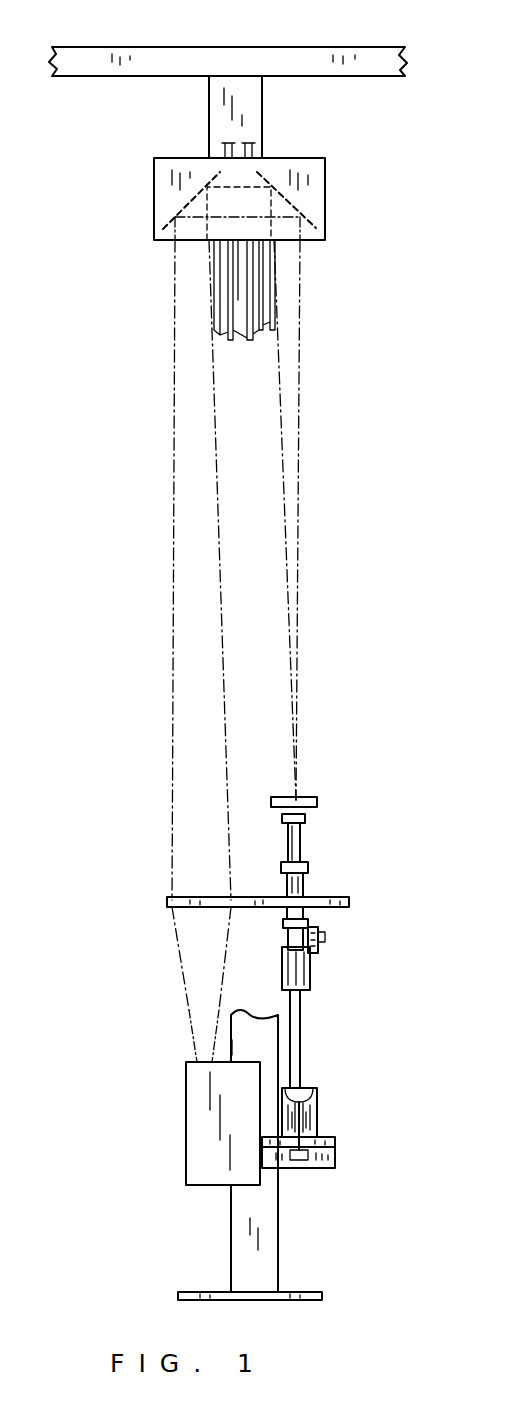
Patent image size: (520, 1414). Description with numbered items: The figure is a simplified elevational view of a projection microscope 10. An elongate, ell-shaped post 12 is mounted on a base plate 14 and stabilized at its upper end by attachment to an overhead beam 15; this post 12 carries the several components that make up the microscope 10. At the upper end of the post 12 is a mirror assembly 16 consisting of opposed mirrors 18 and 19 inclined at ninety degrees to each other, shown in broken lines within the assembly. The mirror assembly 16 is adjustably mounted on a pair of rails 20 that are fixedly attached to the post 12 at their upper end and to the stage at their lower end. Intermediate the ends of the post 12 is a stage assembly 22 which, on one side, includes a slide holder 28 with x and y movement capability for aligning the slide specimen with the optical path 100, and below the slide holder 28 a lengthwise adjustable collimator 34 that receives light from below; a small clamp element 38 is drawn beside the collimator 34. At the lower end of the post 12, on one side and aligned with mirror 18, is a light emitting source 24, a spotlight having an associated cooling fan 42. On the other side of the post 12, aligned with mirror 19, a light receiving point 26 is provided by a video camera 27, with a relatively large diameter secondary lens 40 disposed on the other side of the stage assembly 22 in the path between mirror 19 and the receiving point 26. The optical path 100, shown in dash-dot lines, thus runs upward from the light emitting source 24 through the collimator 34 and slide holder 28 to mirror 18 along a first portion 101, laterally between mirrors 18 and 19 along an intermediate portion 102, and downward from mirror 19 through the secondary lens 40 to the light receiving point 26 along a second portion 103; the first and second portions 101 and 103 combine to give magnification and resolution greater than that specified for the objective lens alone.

The projection microscope 10 is at (160, 330).
The post 12 is at (262, 115).
The base plate 14 is at (305, 1292).
The overhead beam 15 is at (305, 46).
The mirror assembly 16 is at (154, 170).
The mirror 18 is at (297, 205).
The mirror 19 is at (187, 197).
The rails 20 is at (254, 278).
The stage assembly 22 is at (167, 903).
The light emitting source 24 is at (310, 1090).
The light receiving point 26 is at (204, 1060).
The video camera 27 is at (186, 1105).
The slide holder 28 is at (325, 897).
The collimator 34 is at (310, 975).
The clamp 38 is at (320, 945).
The secondary lens 40 is at (205, 897).
The cooling fan 42 is at (320, 1168).
The optical path 100 is at (300, 585).
The first portion 101 is at (300, 444).
The intermediate portion 102 is at (245, 184).
The second portion 103 is at (173, 513).